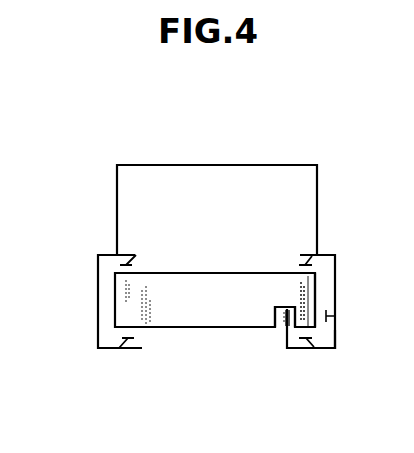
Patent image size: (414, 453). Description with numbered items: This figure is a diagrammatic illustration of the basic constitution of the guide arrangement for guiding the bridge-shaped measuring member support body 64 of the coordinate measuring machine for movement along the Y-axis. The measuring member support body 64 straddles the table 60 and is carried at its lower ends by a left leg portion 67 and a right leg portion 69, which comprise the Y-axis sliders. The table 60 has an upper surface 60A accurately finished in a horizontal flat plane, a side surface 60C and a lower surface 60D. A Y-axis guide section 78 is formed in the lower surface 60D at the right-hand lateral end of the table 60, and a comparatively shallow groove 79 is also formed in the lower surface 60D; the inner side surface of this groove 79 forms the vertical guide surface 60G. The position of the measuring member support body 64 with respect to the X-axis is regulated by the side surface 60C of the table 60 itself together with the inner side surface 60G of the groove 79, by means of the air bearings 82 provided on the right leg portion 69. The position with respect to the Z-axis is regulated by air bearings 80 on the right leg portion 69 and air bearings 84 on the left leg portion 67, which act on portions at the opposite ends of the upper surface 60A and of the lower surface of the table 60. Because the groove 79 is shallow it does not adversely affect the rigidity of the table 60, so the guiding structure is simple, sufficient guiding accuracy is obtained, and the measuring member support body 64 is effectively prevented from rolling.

The measuring member support body 64 is at (218, 165).
The left leg portion 67 is at (98, 289).
The right leg portion 69 is at (335, 293).
The table 60 is at (178, 328).
The upper surface 60A is at (200, 272).
The side surface 60C is at (315, 289).
The lower surface 60D is at (240, 328).
The vertical guide surface 60G is at (290, 334).
The air bearings 82 is at (327, 316).
The groove 79 is at (283, 326).
The air bearings 84 is at (137, 257).
The air bearings 80 is at (306, 255).
The Y-axis guide section 78 is at (333, 360).